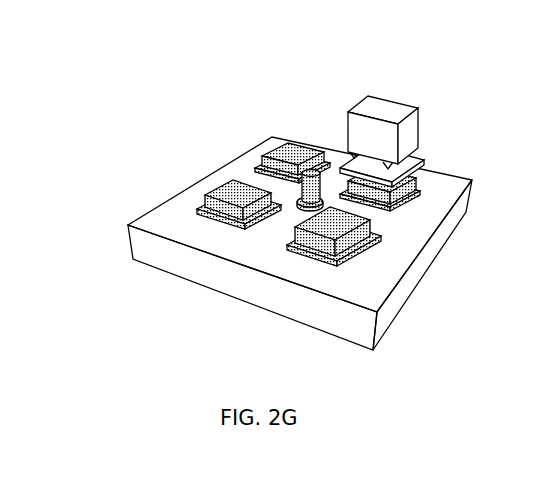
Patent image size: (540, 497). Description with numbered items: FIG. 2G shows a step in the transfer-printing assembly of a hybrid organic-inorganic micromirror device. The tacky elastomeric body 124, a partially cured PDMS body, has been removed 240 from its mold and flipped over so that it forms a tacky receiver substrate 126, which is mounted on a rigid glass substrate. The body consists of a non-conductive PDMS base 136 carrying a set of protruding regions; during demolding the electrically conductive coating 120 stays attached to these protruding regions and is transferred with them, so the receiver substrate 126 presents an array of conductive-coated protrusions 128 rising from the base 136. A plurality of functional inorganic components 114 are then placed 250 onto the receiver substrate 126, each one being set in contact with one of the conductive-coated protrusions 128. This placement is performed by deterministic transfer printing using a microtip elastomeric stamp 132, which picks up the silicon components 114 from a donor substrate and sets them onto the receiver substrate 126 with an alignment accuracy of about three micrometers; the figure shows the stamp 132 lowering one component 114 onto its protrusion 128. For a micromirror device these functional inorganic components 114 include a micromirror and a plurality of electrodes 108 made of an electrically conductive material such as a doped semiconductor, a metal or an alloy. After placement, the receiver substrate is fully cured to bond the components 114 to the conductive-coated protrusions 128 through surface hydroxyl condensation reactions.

The electrically conductive coating 120 is at (300, 153).
The conductive-coated protrusions 128 is at (273, 156).
The tacky elastomeric body 124 is at (273, 224).
The receiver substrate 126 is at (155, 212).
The non-conductive PDMS base 136 is at (390, 310).
The microtip elastomeric stamp 132 is at (413, 119).
The electrodes 108 is at (428, 159).
The functional inorganic components 114 is at (416, 156).
The removal step 240 is at (374, 52).
The placement step 250 is at (336, 70).